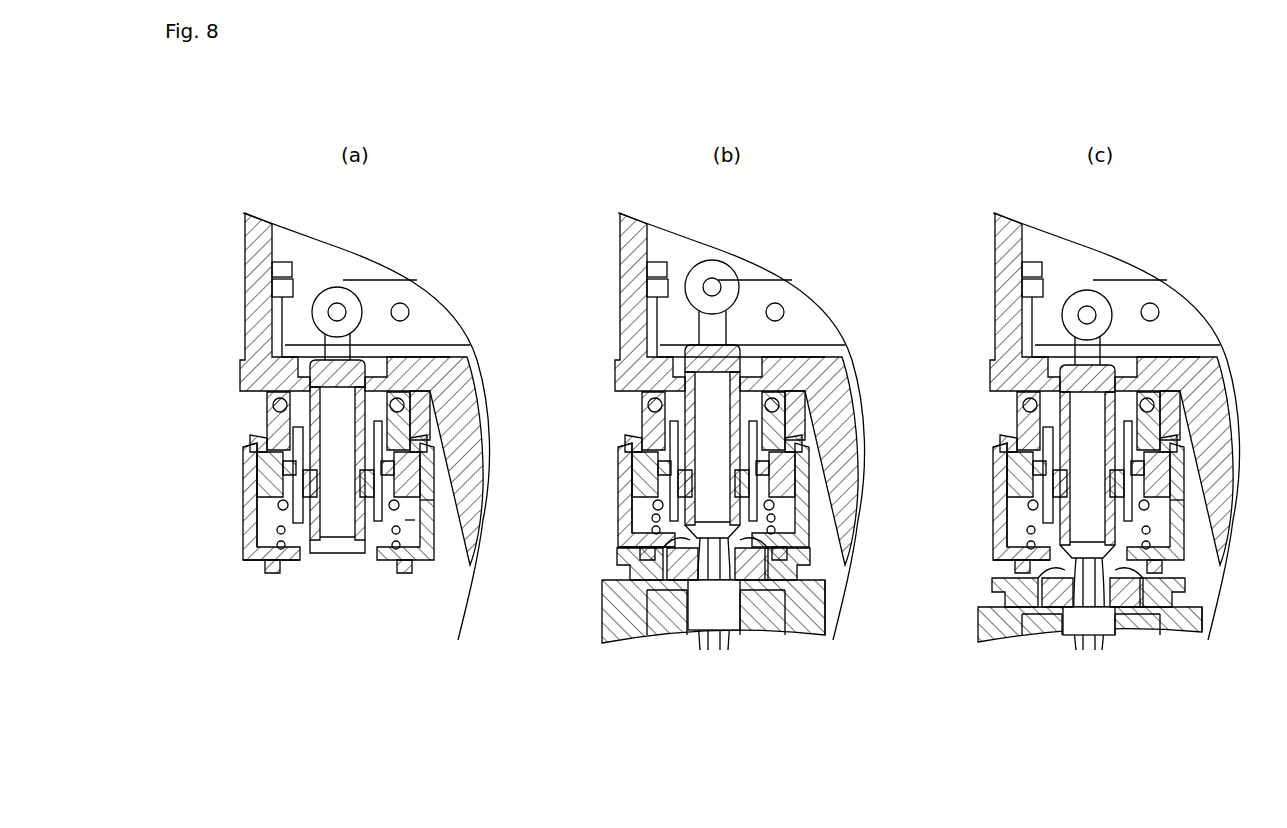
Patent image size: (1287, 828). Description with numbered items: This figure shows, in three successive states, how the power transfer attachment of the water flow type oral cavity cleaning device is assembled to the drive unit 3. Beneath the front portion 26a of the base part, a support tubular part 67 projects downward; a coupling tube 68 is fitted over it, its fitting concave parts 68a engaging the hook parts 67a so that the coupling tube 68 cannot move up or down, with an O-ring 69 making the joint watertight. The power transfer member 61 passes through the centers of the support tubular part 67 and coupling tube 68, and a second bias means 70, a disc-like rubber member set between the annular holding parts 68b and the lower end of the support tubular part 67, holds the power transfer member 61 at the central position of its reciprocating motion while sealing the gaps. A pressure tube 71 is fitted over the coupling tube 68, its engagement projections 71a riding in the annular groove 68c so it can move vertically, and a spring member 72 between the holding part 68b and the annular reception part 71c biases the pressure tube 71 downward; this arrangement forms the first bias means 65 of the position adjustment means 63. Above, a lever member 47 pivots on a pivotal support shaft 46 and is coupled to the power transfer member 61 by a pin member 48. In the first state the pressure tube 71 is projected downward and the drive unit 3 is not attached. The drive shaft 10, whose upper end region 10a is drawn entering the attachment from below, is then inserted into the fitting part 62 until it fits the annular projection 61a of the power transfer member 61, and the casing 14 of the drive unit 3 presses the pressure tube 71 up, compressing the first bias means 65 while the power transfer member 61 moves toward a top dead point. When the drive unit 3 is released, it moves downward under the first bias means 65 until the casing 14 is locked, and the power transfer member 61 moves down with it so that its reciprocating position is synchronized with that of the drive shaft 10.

The drive unit 3 is at (1032, 630).
The drive shaft 10 is at (901, 626).
The pin portion 10a is at (912, 604).
The casing 14 is at (902, 642).
The front portion 26a is at (247, 243).
The pivotal support shaft 46 is at (405, 305).
The lever member 47 is at (378, 278).
The pin member 48 is at (335, 306).
The power transfer member 61 is at (312, 372).
The annular projection 61a is at (347, 553).
The fitting part 62 is at (333, 530).
The position adjustment means 63 is at (645, 615).
The first bias means 65 is at (257, 603).
The support tubular part 67 is at (275, 422).
The hook parts 67a is at (265, 437).
The coupling tube 68 is at (265, 460).
The fitting concave parts 68a is at (430, 390).
The annular holding parts 68b is at (408, 548).
The annular groove 68c is at (265, 477).
The O-ring 69 is at (273, 403).
The second bias means 70 is at (300, 520).
The pressure tube 71 is at (248, 505).
The engagement projections 71a is at (425, 525).
The annular reception part 71c is at (380, 548).
The spring member 72 is at (493, 520).